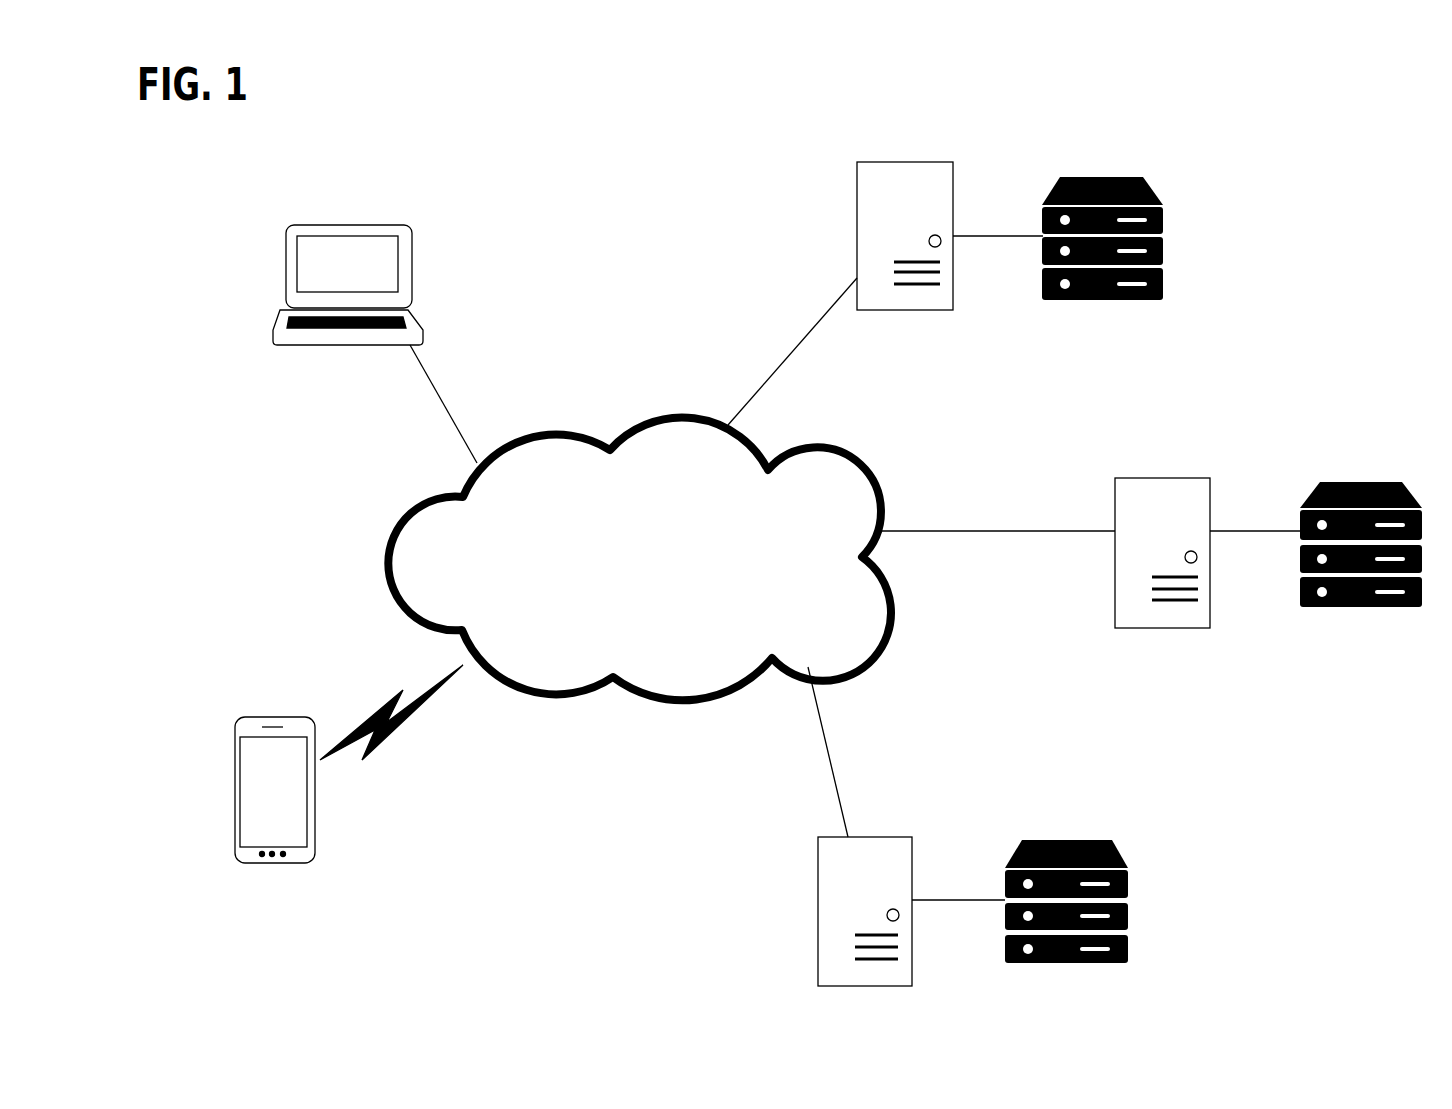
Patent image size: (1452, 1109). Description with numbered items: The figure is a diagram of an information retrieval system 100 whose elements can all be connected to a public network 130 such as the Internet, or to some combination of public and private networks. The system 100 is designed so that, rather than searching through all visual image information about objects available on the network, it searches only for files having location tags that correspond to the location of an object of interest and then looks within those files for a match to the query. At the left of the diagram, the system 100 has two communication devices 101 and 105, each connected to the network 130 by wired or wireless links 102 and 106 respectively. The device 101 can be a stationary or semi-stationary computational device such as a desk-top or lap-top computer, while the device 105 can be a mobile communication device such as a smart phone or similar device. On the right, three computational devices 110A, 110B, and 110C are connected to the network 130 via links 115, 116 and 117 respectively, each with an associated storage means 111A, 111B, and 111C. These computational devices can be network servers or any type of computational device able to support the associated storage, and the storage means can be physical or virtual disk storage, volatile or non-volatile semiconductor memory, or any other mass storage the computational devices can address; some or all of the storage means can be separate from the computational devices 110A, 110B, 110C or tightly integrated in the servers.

The information retrieval system 100 is at (860, 119).
The communication device 101 is at (290, 309).
The link 102 is at (450, 402).
The communication device 105 is at (238, 717).
The link 106 is at (427, 717).
The computational device 110A is at (903, 162).
The computational device 110B is at (1141, 478).
The computational device 110C is at (882, 837).
The storage means 111A is at (1122, 170).
The storage means 111B is at (1400, 482).
The storage means 111C is at (1047, 835).
The link 115 is at (772, 385).
The link 116 is at (1032, 532).
The link 117 is at (827, 756).
The public network 130 is at (639, 559).